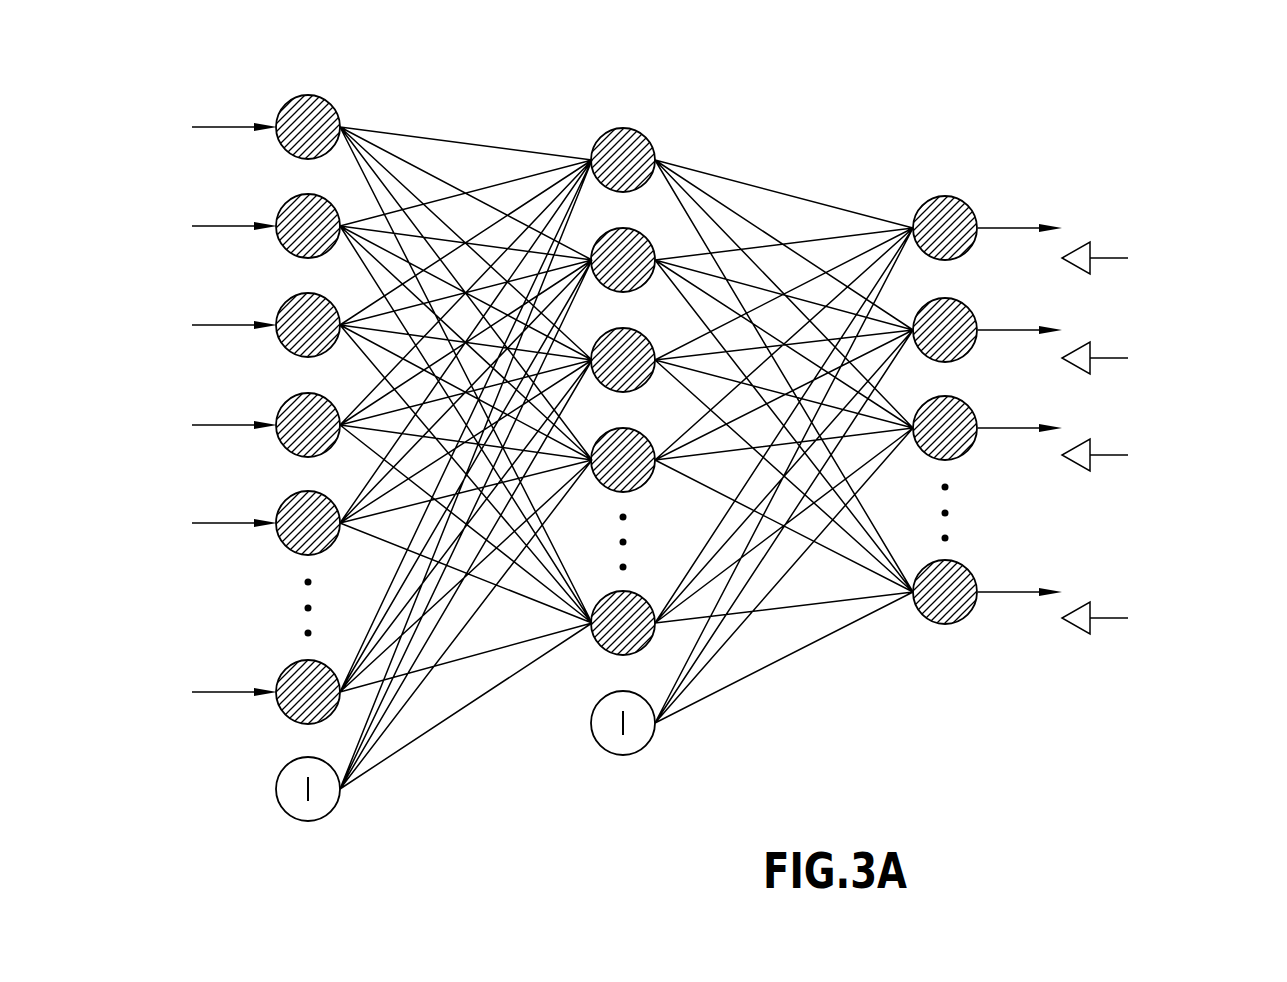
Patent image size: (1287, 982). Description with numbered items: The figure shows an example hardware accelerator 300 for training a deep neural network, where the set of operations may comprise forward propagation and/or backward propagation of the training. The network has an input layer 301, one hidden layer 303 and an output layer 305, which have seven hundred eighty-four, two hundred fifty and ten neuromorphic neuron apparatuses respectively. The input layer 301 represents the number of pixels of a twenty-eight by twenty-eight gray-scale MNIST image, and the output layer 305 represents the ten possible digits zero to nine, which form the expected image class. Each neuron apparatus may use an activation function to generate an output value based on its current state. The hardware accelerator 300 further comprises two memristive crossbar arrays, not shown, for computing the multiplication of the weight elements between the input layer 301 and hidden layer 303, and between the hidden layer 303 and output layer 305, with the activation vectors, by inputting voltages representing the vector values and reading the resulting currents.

The hardware accelerator 300 is at (701, 455).
The input layer 301 is at (326, 834).
The hidden layer 303 is at (640, 762).
The output layer 305 is at (952, 633).